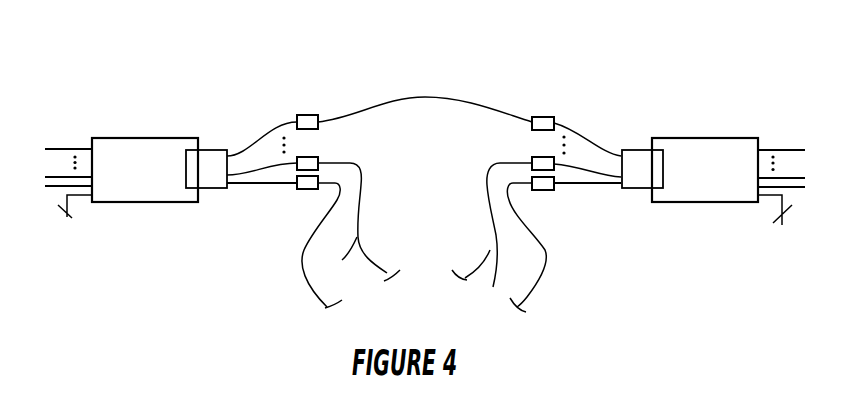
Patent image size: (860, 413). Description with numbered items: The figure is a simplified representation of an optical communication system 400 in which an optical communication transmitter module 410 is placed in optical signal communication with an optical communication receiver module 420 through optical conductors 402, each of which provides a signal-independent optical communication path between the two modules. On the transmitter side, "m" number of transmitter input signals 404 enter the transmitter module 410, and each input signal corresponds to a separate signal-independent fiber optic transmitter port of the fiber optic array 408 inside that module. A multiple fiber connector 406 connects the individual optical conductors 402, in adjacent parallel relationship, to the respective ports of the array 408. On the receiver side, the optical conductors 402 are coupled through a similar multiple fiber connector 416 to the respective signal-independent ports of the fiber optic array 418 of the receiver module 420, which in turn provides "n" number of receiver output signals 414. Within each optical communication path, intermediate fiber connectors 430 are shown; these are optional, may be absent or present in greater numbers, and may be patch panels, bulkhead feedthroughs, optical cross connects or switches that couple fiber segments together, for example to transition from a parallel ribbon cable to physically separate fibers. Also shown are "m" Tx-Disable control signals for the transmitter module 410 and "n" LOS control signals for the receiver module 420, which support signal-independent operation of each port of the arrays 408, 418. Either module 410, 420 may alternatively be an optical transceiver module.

The optical communication system 400 is at (506, 70).
The optical conductor 402 is at (362, 112).
The transmitter input signals 404 is at (57, 149).
The multiple fiber connector 406 is at (215, 158).
The fiber optic array 408 is at (190, 157).
The optical communication transmitter module 410 is at (163, 180).
The receiver output signals 414 is at (780, 150).
The multiple fiber connector 416 is at (634, 157).
The fiber optic array 418 is at (658, 160).
The optical communication receiver module 420 is at (723, 180).
The intermediate fiber connector 430 is at (308, 115).